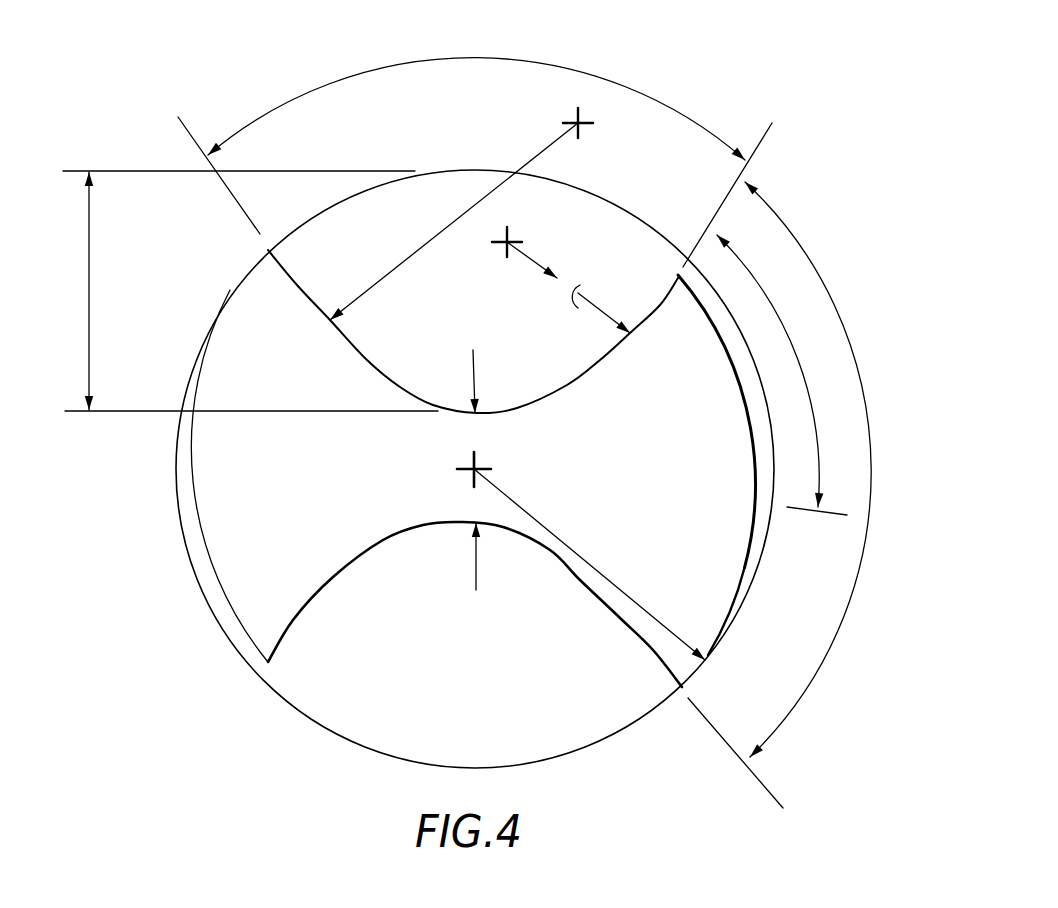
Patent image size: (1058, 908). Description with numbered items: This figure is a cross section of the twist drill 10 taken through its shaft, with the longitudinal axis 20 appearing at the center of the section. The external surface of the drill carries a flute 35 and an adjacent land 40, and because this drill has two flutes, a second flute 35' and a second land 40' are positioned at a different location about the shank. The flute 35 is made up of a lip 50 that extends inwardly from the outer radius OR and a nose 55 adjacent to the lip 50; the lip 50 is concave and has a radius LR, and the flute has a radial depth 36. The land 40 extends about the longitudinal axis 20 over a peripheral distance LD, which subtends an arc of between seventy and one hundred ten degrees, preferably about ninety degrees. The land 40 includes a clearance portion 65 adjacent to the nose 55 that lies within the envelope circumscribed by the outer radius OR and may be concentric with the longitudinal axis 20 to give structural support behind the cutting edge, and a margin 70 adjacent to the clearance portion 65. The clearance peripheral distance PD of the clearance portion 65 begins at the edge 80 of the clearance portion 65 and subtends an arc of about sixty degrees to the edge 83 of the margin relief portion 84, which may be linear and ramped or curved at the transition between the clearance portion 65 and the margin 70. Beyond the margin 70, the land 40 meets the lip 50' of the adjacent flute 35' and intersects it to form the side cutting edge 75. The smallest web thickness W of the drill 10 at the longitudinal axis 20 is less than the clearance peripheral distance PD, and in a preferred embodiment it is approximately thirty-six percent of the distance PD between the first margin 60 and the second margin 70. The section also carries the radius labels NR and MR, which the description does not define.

The twist drill 10 is at (96, 490).
The longitudinal axis 20 is at (456, 469).
The flute 35 is at (476, 82).
The second flute 35' is at (343, 791).
The radial depth of the flute 36 is at (89, 307).
The land 40 is at (829, 469).
The second land 40' is at (167, 476).
The lip 50 is at (473, 324).
The lip of adjacent flute 50' is at (475, 604).
The nose 55 is at (662, 300).
The first margin 60 is at (712, 660).
The clearance portion 65 is at (725, 333).
The margin 70 is at (717, 650).
The side cutting edge 75 is at (682, 688).
The edge of the clearance portion 80 is at (678, 273).
The edge of margin relief portion 83 is at (757, 488).
The margin relief portion 84 is at (738, 580).
The lip radius LR is at (540, 152).
The nose radius NR is at (546, 295).
The margin radius MR is at (589, 560).
The outer radius OR is at (528, 511).
The smallest web thickness W is at (473, 378).
The clearance peripheral distance PD is at (787, 350).
The land peripheral distance LD is at (855, 348).